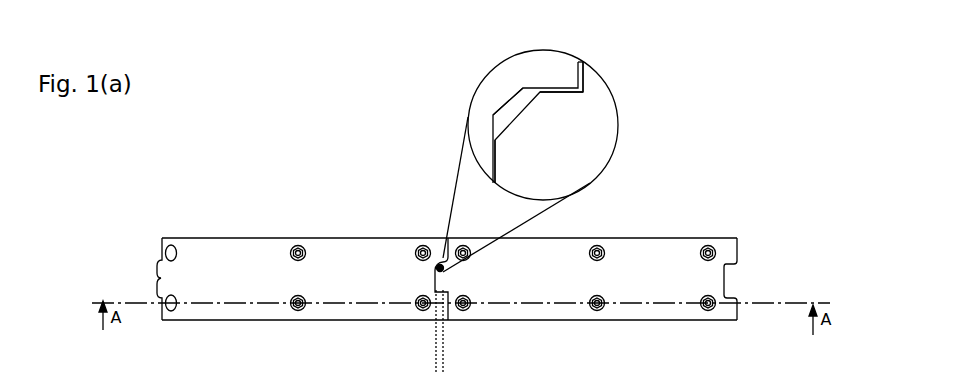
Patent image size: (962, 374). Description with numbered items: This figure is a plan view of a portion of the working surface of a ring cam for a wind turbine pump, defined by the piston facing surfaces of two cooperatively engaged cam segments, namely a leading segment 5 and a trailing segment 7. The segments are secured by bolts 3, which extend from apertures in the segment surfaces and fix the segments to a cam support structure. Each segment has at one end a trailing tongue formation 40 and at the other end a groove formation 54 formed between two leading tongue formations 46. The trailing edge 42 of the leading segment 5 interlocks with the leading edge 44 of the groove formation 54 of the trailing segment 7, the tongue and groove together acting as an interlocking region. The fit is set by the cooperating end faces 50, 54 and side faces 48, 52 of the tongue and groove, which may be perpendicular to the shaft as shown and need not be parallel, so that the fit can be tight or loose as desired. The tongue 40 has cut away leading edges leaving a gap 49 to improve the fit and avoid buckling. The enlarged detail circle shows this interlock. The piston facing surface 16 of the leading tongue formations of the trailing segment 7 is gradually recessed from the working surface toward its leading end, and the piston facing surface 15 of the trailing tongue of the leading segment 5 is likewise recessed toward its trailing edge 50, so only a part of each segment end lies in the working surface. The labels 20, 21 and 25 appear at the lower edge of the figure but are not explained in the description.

The bolts 3 is at (607, 250).
The leading segment 5 is at (658, 250).
The trailing segment 7 is at (232, 250).
The piston facing surface 15 is at (627, 288).
The piston facing surface 16 is at (337, 272).
The base 20 is at (27, 371).
The mounting hole 21 is at (245, 370).
The fastener 25 is at (176, 371).
The trailing tongue formation 40 is at (157, 279).
The trailing edge 42 is at (585, 82).
The leading edge 44 is at (494, 114).
The leading tongue formations 46 is at (533, 72).
The side face of tongue 48 is at (563, 97).
The gap 49 is at (508, 110).
The end face of tongue 50 is at (440, 150).
The side face of groove 52 is at (552, 62).
The groove formation 54 is at (590, 155).